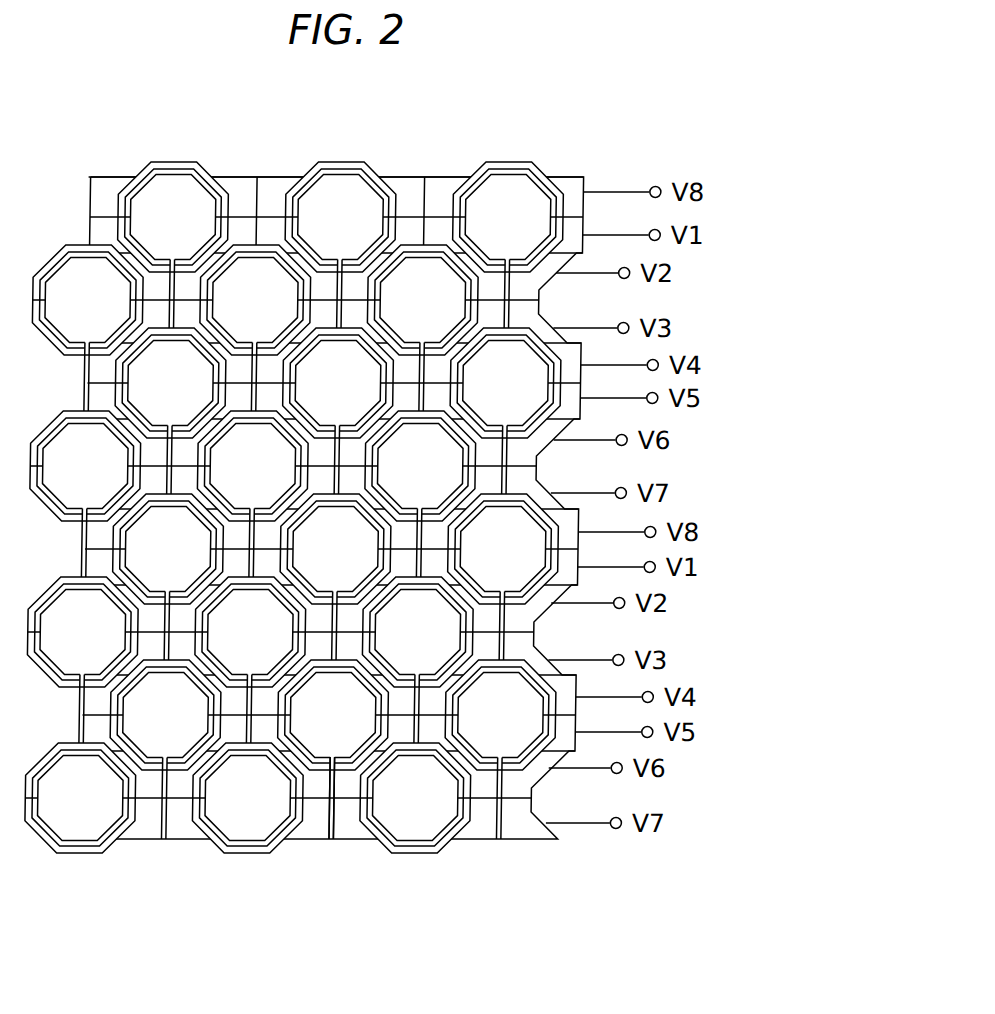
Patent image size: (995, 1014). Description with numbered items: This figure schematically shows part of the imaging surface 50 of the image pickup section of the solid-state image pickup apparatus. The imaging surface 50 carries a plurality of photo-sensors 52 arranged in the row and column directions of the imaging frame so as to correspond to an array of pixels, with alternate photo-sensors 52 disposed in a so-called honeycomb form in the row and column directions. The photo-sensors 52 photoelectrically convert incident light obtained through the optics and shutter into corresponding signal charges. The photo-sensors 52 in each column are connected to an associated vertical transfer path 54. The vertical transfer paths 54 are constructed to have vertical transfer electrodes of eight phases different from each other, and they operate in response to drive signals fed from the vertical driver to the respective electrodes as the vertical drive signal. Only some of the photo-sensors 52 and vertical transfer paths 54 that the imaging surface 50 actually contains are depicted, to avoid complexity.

The imaging surface 50 is at (160, 864).
The photo-sensor 52 is at (246, 826).
The vertical transfer path 54 is at (311, 826).